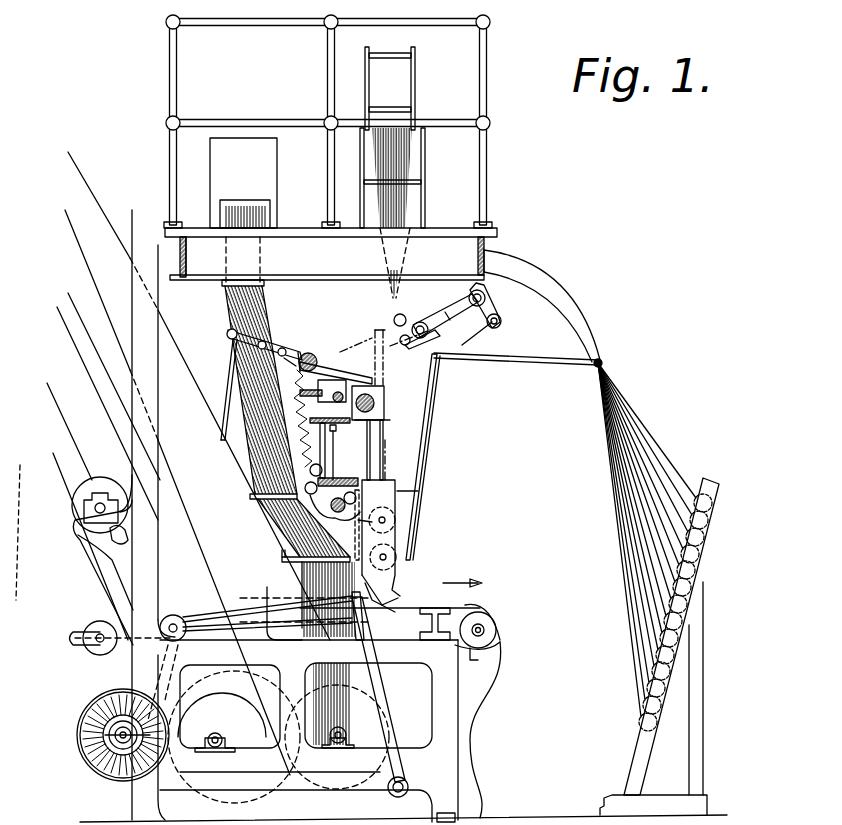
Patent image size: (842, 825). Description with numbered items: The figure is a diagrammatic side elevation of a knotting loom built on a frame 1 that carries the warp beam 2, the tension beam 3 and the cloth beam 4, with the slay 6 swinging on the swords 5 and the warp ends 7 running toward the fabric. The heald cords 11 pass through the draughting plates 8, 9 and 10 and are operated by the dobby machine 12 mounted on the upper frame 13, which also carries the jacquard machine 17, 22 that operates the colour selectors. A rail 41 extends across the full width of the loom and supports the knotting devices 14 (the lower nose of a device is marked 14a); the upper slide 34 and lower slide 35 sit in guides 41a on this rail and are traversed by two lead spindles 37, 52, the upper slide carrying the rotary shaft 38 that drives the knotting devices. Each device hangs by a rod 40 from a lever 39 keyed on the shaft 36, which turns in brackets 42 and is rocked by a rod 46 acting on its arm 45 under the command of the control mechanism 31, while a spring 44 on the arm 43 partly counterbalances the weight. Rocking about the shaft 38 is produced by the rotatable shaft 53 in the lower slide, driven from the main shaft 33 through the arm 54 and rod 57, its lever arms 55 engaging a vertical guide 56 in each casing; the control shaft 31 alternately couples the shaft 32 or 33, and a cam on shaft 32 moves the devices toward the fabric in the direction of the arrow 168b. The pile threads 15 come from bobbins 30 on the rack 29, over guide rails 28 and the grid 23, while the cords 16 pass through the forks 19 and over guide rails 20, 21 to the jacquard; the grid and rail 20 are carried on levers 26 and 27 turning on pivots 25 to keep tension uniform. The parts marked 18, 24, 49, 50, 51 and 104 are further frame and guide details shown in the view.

The frame 1 is at (310, 516).
The warp beam 2 is at (92, 770).
The tension beam 3 is at (172, 615).
The cloth beam 4 is at (490, 620).
The swords 5 is at (376, 688).
The slay 6 is at (366, 626).
The warp ends 7 is at (240, 612).
The draughting plate 8 is at (282, 560).
The draughting plate 9 is at (250, 496).
The draughting plate 10 is at (226, 284).
The heald cords 11 is at (232, 312).
The dobby machine 12 is at (270, 197).
The frame 13 is at (492, 230).
The knotting devices 14 is at (396, 580).
The housing nose 14a is at (395, 597).
The pile threads 15 is at (612, 520).
The cords 16 is at (384, 436).
The jacquard machine 17 is at (415, 100).
The guide rod 18 is at (418, 492).
The forks 19 is at (411, 345).
The guide rail 20 is at (421, 322).
The guide rail 21 is at (411, 330).
The jacquard machine 22 is at (415, 183).
The grid 23 is at (440, 362).
The roller 24 is at (486, 298).
The pivot 25 is at (502, 320).
The lever 26 is at (476, 340).
The lever 27 is at (457, 323).
The guide rails 28 is at (604, 362).
The rack 29 is at (632, 770).
The bobbins 30 is at (696, 495).
The main control shaft 31 is at (102, 560).
The shaft 32 is at (214, 733).
The main shaft 33 is at (346, 734).
The upper slide 34 is at (342, 395).
The lower slide 35 is at (305, 488).
The shaft 36 is at (312, 353).
The lead spindle 37 is at (333, 386).
The rotary shaft 38 is at (377, 396).
The lever 39 is at (345, 372).
The rod 40 is at (384, 409).
The rail 41 is at (330, 448).
The guides 41a is at (334, 450).
The brackets 42 is at (311, 389).
The arm 43 is at (296, 352).
The spring 44 is at (310, 470).
The arm 45 is at (263, 343).
The rod 46 is at (226, 375).
The pivot 49 is at (340, 788).
The disc 50 is at (240, 782).
The roller 51 is at (396, 557).
The lead spindle 52 is at (340, 478).
The rotatable shaft 53 is at (343, 516).
The arm 54 is at (335, 511).
The lever arms 55 is at (382, 510).
The vertical guide 56 is at (362, 540).
The rod 57 is at (278, 624).
The rail 104 is at (365, 633).
The arrow 168b is at (464, 573).